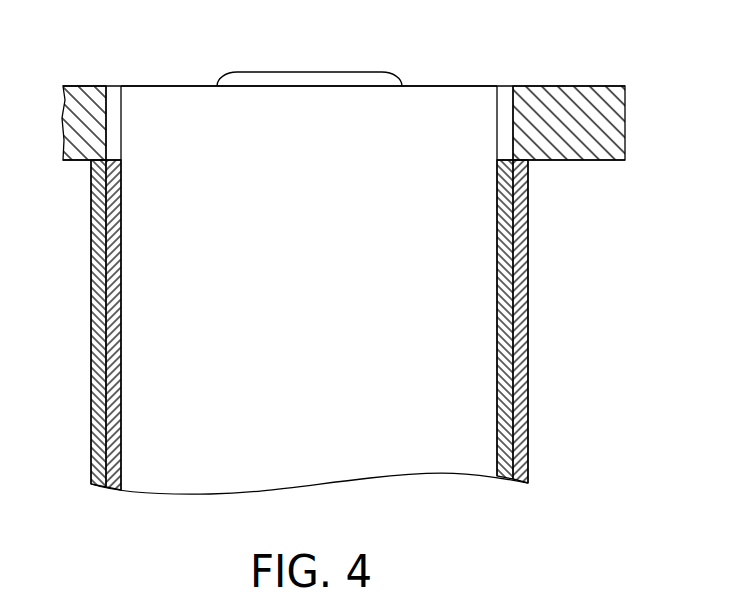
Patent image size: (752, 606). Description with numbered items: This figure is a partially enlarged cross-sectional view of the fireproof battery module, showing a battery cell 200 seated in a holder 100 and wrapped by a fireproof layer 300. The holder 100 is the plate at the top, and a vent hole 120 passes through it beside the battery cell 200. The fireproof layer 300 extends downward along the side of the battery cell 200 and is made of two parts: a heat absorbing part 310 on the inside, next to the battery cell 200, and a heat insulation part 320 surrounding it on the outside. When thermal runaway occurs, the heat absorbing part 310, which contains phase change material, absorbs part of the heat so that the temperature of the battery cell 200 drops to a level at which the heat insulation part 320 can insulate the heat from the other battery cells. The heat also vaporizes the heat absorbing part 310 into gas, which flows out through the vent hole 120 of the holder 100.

The holder 100 is at (613, 125).
The vent hole 120 is at (506, 92).
The battery cell 200 is at (307, 135).
The fireproof layer 300 is at (620, 268).
The heat absorbing part 310 is at (502, 313).
The heat insulation part 320 is at (517, 347).